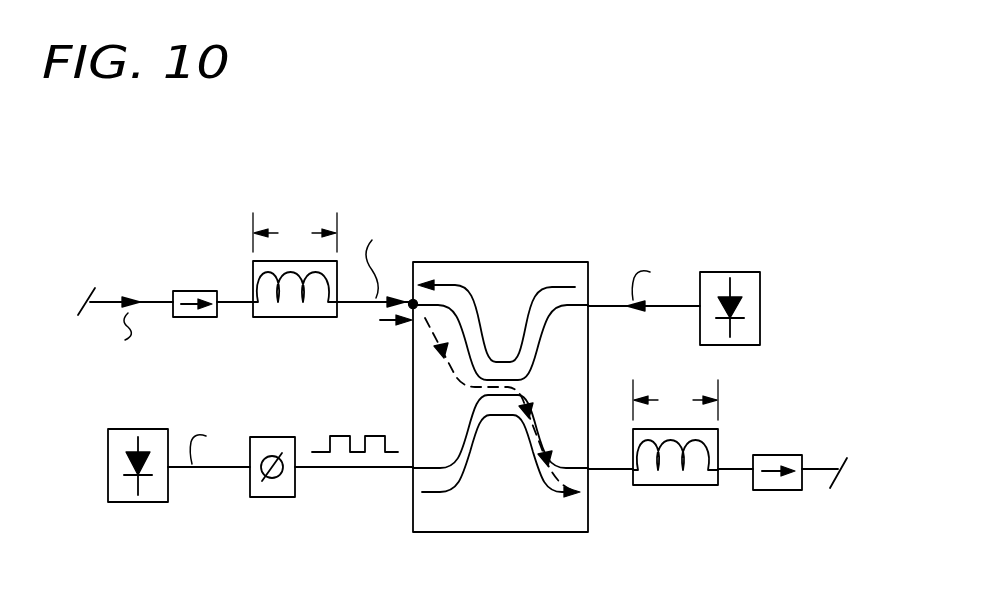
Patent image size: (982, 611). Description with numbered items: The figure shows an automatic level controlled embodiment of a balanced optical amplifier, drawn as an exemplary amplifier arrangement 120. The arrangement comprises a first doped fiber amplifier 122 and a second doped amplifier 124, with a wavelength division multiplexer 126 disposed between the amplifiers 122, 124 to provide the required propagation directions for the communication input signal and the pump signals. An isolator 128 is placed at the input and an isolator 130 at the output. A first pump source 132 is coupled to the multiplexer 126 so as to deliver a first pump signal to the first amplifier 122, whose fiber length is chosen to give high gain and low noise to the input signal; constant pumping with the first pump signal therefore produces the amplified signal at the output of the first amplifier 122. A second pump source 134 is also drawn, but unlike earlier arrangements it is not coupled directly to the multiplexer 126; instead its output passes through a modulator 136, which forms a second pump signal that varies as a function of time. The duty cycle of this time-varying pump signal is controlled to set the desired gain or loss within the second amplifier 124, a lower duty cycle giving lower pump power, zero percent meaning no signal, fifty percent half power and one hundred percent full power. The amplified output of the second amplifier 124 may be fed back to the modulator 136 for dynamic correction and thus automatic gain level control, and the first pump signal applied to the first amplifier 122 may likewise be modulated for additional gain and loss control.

The amplifier arrangement 120 is at (237, 189).
The first doped fiber amplifier 122 is at (293, 318).
The second doped amplifier 124 is at (670, 487).
The wavelength division multiplexer 126 is at (515, 262).
The isolator 128 is at (199, 290).
The isolator 130 is at (779, 455).
The first pump source 132 is at (727, 268).
The second pump source 134 is at (143, 503).
The modulator 136 is at (270, 498).